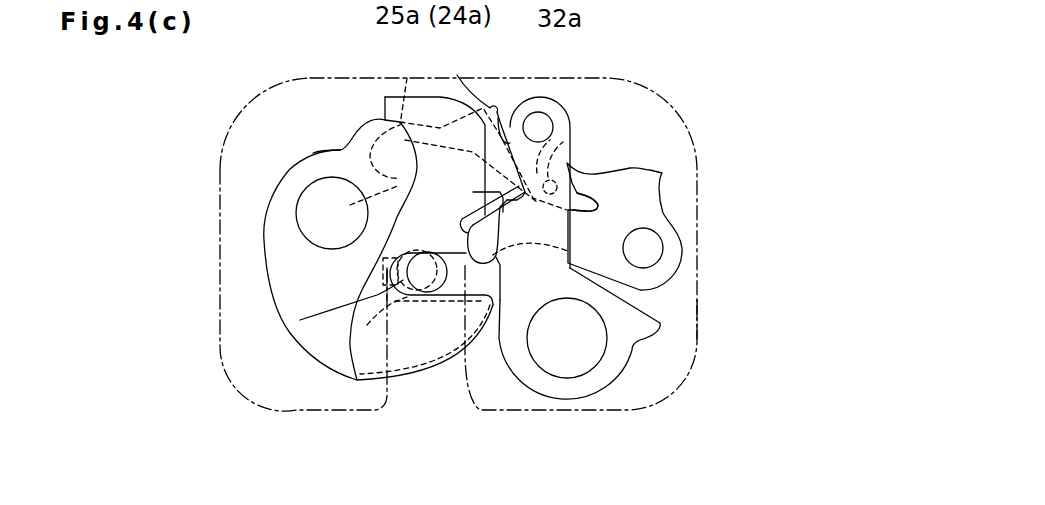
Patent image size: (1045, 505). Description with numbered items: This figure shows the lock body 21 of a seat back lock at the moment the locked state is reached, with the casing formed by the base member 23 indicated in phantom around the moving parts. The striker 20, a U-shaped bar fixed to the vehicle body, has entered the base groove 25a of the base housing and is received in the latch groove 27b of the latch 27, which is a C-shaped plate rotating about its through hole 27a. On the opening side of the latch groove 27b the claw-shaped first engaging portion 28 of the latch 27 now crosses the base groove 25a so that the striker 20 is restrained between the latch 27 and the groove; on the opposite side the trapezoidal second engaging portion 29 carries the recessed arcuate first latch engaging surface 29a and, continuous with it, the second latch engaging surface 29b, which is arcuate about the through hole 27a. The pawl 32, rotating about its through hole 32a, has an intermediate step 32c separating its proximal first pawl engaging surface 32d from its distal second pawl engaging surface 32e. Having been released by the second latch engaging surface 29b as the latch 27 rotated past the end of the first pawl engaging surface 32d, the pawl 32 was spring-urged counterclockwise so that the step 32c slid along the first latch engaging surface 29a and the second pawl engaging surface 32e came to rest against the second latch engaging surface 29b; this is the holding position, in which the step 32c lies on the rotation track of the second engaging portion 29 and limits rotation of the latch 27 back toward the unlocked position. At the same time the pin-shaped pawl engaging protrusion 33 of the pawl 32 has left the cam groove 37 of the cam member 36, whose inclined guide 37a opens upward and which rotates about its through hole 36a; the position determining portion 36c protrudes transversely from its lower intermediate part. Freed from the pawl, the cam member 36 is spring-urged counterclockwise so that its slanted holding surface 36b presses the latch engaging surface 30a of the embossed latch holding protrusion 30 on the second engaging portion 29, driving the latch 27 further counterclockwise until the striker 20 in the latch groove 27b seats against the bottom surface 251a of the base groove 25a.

The striker 20 is at (382, 303).
The lock body 21 is at (697, 102).
The base member 23 is at (697, 345).
The base groove 25a is at (388, 358).
The latch 27 is at (287, 183).
The through hole 27a is at (326, 185).
The latch groove 27b is at (300, 320).
The first engaging portion 28 is at (456, 363).
The second engaging portion 29 is at (457, 78).
The first latch engaging surface 29a is at (447, 350).
The second latch engaging surface 29b is at (518, 205).
The latch holding protrusion 30 is at (367, 122).
The latch engaging surface 30a is at (332, 213).
The pawl 32 is at (630, 310).
The through hole 32a is at (557, 365).
The step 32c is at (473, 192).
The first pawl engaging surface 32d is at (502, 265).
The second pawl engaging surface 32e is at (500, 118).
The pawl engaging protrusion 33 is at (587, 120).
The cam member 36 is at (652, 171).
The through hole 36a is at (660, 249).
The holding surface 36b is at (407, 78).
The position determining portion 36c is at (461, 232).
The cam groove 37 is at (598, 212).
The guide 37a is at (563, 155).
The bottom surface 251a is at (380, 270).